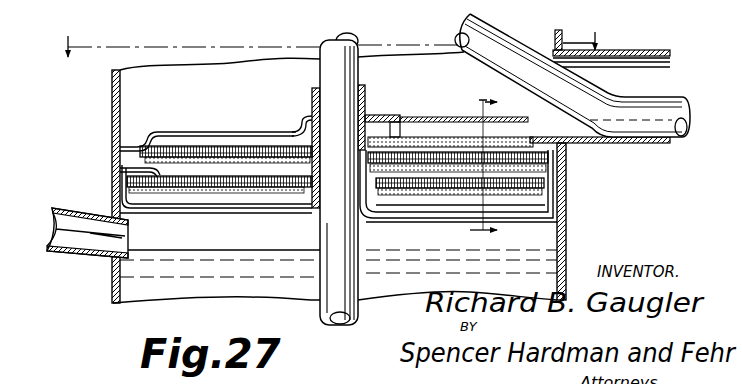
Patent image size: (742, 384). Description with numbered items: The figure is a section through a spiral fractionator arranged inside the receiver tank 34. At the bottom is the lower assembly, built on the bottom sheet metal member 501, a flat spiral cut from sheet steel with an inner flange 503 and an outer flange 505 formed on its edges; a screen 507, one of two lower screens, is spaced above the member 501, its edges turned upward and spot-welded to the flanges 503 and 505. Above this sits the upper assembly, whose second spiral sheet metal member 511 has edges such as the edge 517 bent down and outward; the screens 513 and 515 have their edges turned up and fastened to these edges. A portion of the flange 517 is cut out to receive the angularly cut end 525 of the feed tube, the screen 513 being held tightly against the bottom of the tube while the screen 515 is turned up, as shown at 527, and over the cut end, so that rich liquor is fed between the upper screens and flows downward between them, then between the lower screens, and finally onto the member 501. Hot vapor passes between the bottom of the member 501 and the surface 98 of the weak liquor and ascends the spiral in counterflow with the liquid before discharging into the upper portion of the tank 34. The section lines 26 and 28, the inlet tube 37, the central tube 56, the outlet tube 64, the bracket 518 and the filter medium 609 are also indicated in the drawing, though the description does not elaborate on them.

The section line 26- 26 is at (331, 36).
The section line 28- 28 is at (495, 172).
The receiver tank 34 is at (197, 80).
The inlet tube 37 is at (72, 258).
The central shaft tube 56 is at (354, 50).
The outlet tube 64 is at (668, 52).
The surface of the weak liquor 98 is at (248, 250).
The bottom sheet metal member 501 is at (192, 215).
The inner flange 503 is at (412, 206).
The outer flange 505 is at (126, 185).
The screen 507 is at (125, 168).
The second spiral sheet metal member 511 is at (212, 131).
The screen 513 is at (122, 151).
The screen 515 is at (165, 145).
The edge 517 is at (147, 146).
The bracket 518 is at (296, 131).
The angularly cut end of the tube 525 is at (533, 110).
The turned-up portion of screen 527 is at (531, 128).
The filter medium 609 is at (205, 185).